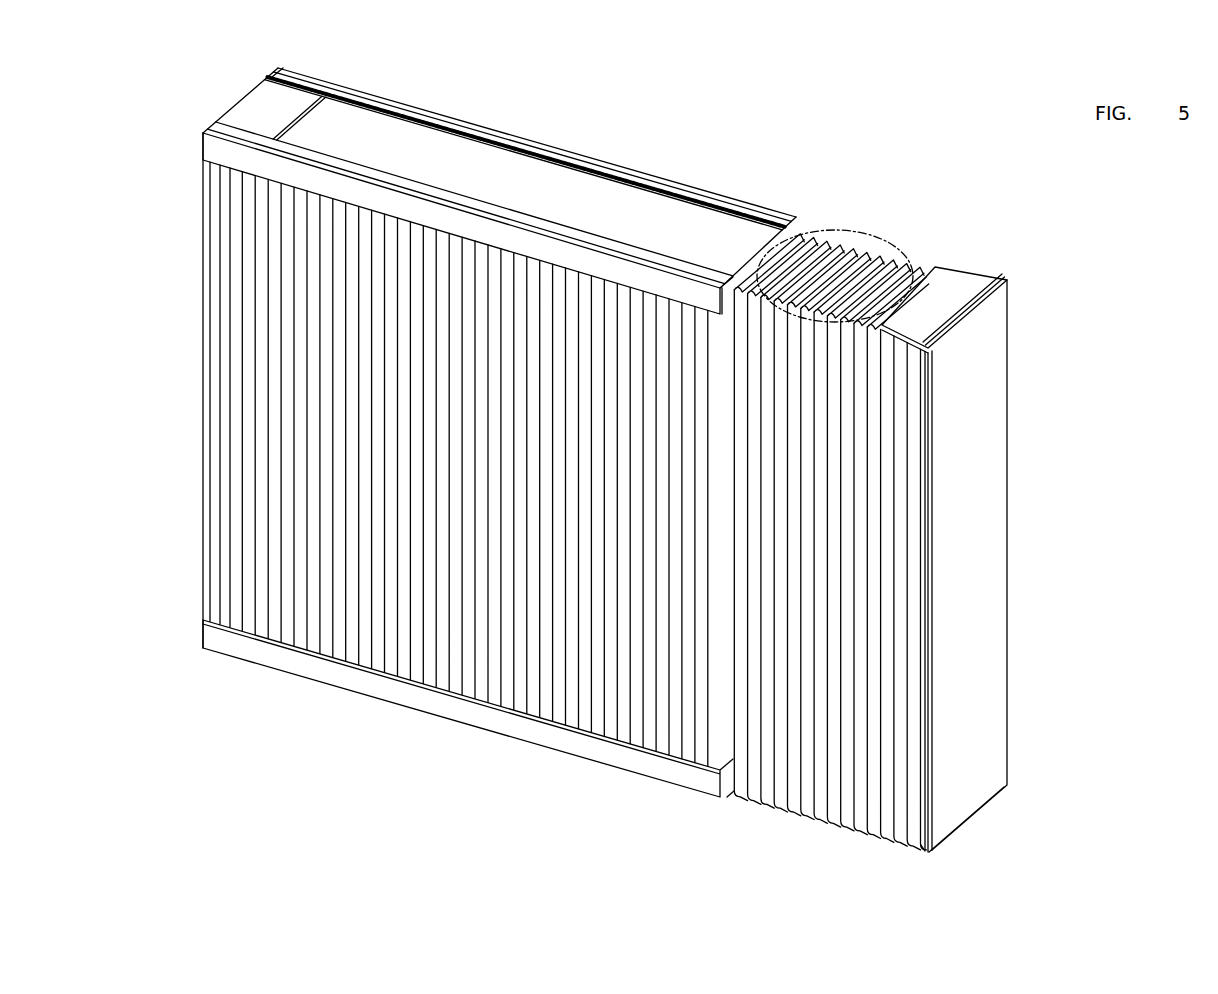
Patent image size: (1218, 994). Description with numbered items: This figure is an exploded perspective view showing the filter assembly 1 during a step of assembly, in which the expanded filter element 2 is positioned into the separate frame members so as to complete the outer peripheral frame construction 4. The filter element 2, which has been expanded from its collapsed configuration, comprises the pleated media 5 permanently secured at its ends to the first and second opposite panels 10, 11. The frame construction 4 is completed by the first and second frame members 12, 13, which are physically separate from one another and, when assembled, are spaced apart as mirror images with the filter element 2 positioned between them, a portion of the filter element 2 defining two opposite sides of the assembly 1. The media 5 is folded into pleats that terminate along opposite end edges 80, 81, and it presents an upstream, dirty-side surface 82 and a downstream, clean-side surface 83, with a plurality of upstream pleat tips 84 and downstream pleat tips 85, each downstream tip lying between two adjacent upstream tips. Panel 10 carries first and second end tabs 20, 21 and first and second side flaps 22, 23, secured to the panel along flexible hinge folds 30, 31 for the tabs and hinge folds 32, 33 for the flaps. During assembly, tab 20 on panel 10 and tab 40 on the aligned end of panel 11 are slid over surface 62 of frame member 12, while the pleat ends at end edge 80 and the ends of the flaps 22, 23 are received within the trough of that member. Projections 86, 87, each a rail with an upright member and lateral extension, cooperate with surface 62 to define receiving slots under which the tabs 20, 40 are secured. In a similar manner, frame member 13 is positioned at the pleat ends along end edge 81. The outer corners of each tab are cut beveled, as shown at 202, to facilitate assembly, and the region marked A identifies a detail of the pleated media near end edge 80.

The filter assembly 1 is at (688, 143).
The filter element 2 is at (990, 500).
The outer peripheral frame construction 4 is at (990, 555).
The media 5 is at (497, 625).
The first panel 10 is at (990, 598).
The second panel 11 is at (202, 235).
The first frame member 12 is at (417, 147).
The second frame member 13 is at (232, 665).
The first end tab 20 is at (930, 293).
The second end tab 21 is at (967, 822).
The first side flap 22 is at (920, 485).
The second side flap 23 is at (1008, 279).
The hinge fold 30 is at (997, 277).
The hinge fold 31 is at (997, 798).
The hinge fold 32 is at (930, 435).
The hinge fold 33 is at (1010, 398).
The tab 40 is at (257, 108).
The surface 62 is at (499, 191).
The end edge 80 is at (870, 262).
The end edge 81 is at (812, 823).
The upstream surface 82 is at (870, 710).
The downstream surface 83 is at (822, 262).
The upstream pleat tips 84 is at (855, 755).
The downstream pleat tips 85 is at (925, 398).
The projection 86 is at (548, 222).
The projection 87 is at (553, 153).
The beveled corner 202 is at (885, 327).
The detail region A is at (862, 265).